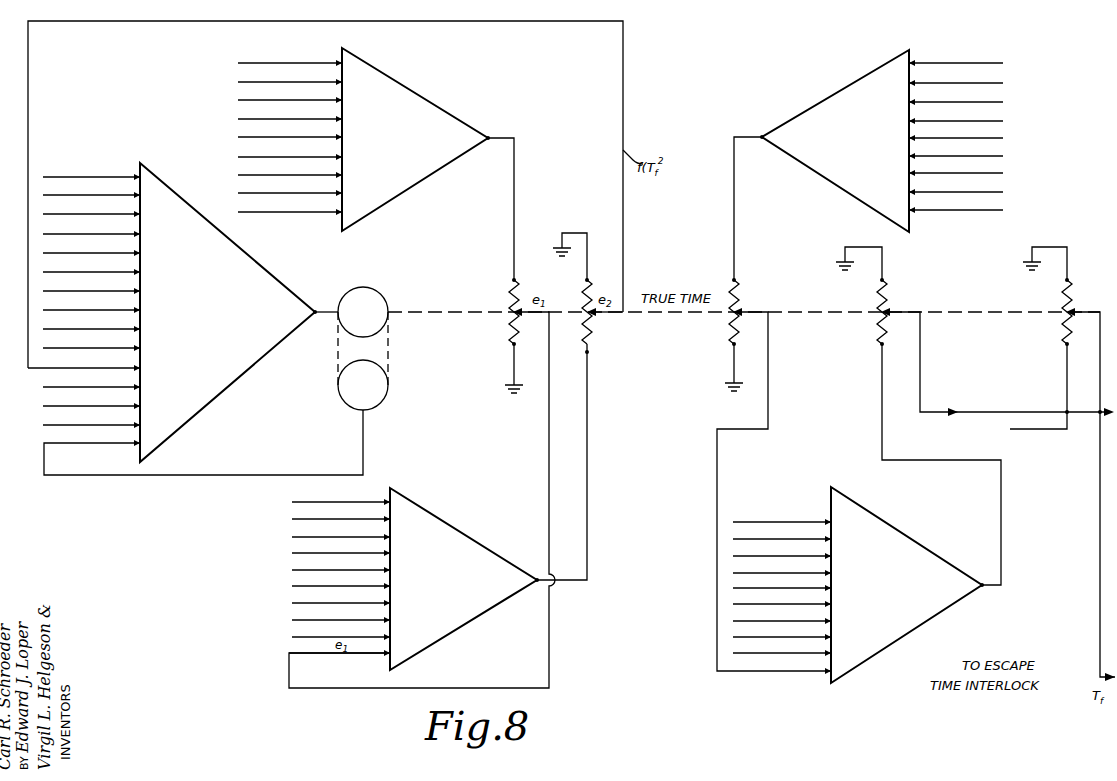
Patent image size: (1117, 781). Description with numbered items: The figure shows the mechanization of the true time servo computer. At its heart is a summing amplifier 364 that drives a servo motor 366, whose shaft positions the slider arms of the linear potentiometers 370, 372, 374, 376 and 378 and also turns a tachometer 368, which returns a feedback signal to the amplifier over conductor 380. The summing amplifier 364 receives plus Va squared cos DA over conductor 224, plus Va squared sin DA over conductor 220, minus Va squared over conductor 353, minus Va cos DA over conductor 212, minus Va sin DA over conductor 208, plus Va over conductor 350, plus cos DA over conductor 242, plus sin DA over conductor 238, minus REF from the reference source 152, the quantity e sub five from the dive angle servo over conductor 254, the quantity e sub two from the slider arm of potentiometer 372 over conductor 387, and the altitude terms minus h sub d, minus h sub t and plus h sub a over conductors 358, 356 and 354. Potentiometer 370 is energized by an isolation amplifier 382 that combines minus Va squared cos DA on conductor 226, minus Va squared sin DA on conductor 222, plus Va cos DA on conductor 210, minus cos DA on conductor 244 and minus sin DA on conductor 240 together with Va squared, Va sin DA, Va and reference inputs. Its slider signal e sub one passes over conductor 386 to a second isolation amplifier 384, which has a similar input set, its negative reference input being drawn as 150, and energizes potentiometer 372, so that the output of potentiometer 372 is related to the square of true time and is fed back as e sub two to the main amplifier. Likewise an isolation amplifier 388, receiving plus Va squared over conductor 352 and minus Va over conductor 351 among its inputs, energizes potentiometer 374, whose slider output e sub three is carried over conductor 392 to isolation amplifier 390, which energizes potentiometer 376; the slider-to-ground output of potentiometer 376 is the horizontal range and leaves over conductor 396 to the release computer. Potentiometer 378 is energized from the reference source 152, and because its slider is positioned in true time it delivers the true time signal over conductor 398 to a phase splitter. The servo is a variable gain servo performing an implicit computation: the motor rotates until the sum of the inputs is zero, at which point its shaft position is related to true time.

The negative reference voltage input 150 is at (392, 637).
The reference source 152 is at (142, 329).
The V_a sin DA conductor 208 is at (142, 253).
The +V_a cos DA conductor 210 is at (344, 119).
The −V_a cos DA conductor 212 is at (142, 234).
The +V_a² sin DA conductor 220 is at (142, 195).
The −V_a² sin DA conductor 222 is at (344, 82).
The +V_a² cos DA conductor 224 is at (142, 177).
The −V_a² cos DA conductor 226 is at (344, 63).
The +sin DA conductor 238 is at (142, 310).
The −sin DA conductor 240 is at (344, 193).
The +cos DA conductor 242 is at (142, 291).
The −cos DA conductor 244 is at (344, 175).
The e5 conductor 254 is at (142, 348).
The +V_a conductor 350 is at (142, 214).
The −V_a conductor 351 is at (1003, 156).
The +V_a² conductor 352 is at (1003, 102).
The −V_a² conductor 353 is at (344, 100).
The +h_a conductor 354 is at (142, 425).
The −h_t conductor 356 is at (142, 406).
The −h_d conductor 358 is at (142, 387).
The summing amplifier 364 is at (254, 270).
The servo motor 366 is at (380, 293).
The tachometer 368 is at (388, 385).
The linear potentiometer 370 is at (512, 335).
The linear potentiometer 372 is at (590, 338).
The linear potentiometer 374 is at (730, 336).
The linear potentiometer 376 is at (876, 328).
The linear potentiometer 378 is at (1060, 328).
The tachometer feedback conductor 380 is at (242, 475).
The isolation amplifier 382 is at (435, 100).
The isolation amplifier 384 is at (462, 550).
The e1 conductor 386 is at (142, 368).
The e2 conductor 387 is at (623, 150).
The isolation amplifier 388 is at (818, 110).
The isolation amplifier 390 is at (932, 562).
The ef conductor 392 is at (722, 430).
The R_h output conductor 396 is at (930, 414).
The true time output conductor 398 is at (1100, 494).